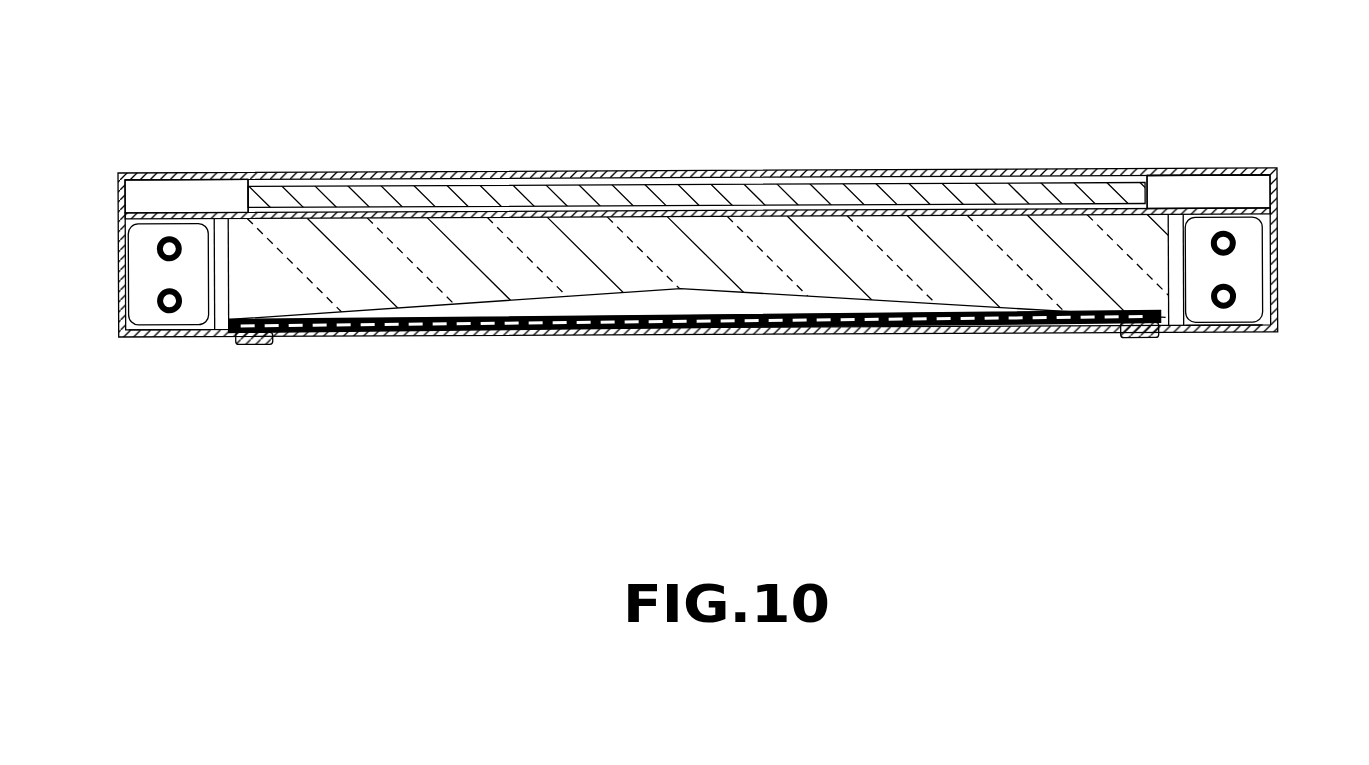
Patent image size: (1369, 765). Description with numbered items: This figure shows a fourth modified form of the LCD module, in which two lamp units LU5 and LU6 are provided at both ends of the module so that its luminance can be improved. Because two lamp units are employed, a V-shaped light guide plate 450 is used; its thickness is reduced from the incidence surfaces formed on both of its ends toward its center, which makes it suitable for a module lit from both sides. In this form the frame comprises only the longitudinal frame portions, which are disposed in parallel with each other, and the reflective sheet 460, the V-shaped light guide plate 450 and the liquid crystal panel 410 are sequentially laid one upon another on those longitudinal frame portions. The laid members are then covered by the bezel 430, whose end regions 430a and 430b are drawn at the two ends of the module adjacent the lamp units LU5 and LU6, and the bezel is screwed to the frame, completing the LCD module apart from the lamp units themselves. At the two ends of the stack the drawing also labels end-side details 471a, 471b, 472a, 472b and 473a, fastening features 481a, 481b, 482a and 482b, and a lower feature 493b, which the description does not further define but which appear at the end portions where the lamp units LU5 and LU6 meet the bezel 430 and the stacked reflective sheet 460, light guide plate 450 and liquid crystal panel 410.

The liquid crystal panel 410 is at (690, 207).
The bezel 430 is at (1216, 168).
The frame right end portion 430a is at (1169, 170).
The frame left end portion 430b is at (190, 173).
The V-shaped light guide plate 450 is at (583, 218).
The reflective sheet 460 is at (653, 335).
The right holder 471a is at (1276, 272).
The left holder 471b is at (118, 270).
The right frame recess 472a is at (1238, 207).
The left frame recess 472b is at (148, 173).
The right holder bottom 473a is at (1218, 332).
The right fixing screws 481a is at (1236, 304).
The left fixing screws 481b is at (160, 305).
The right spacer 482a is at (1180, 258).
The left spacer 482b is at (215, 268).
The left foot 493b is at (208, 337).
The lamp unit LU5 is at (1166, 340).
The lamp unit LU6 is at (161, 337).